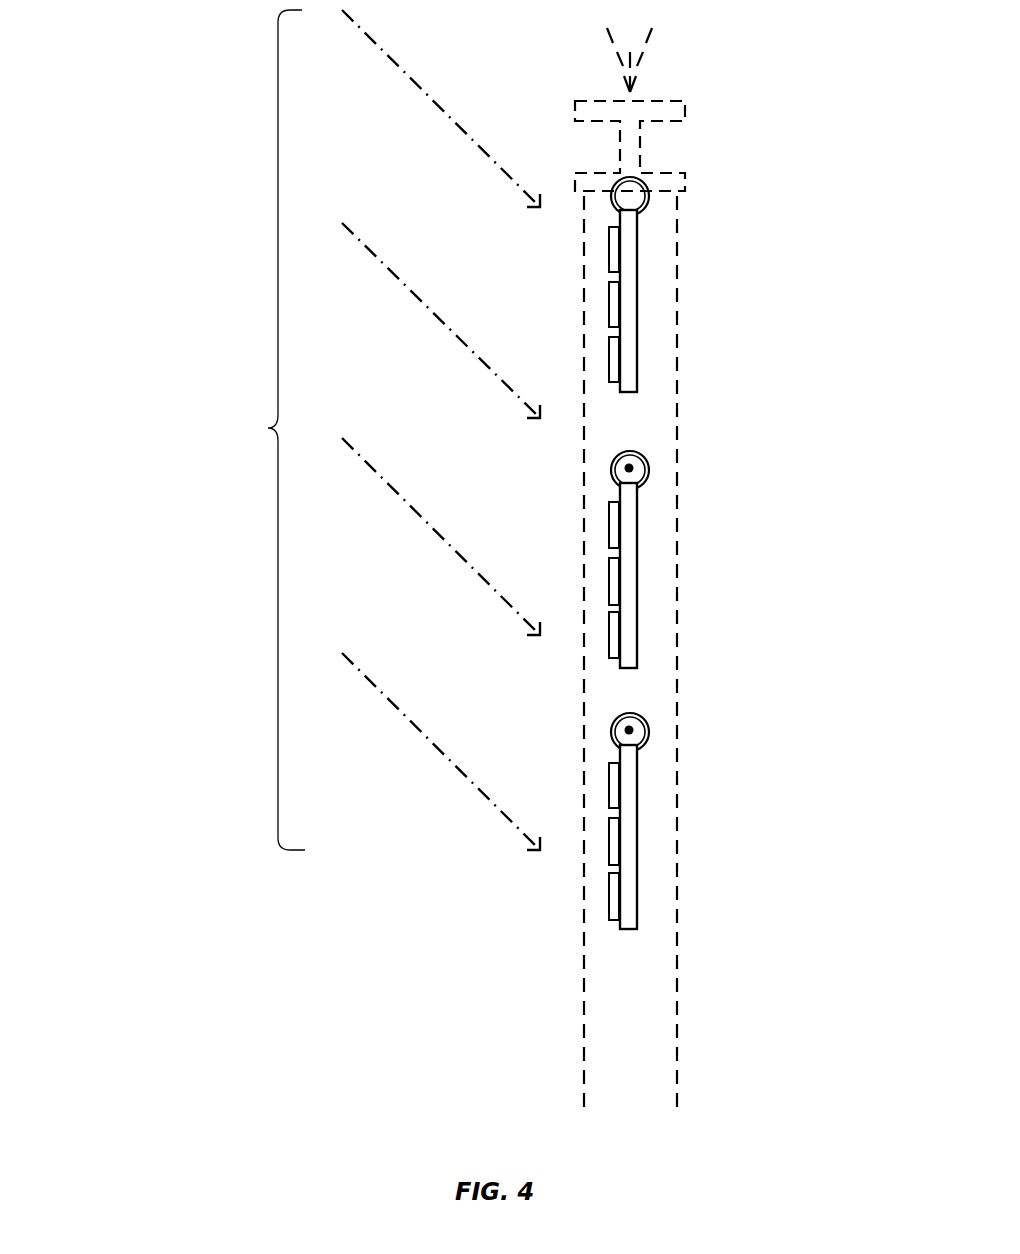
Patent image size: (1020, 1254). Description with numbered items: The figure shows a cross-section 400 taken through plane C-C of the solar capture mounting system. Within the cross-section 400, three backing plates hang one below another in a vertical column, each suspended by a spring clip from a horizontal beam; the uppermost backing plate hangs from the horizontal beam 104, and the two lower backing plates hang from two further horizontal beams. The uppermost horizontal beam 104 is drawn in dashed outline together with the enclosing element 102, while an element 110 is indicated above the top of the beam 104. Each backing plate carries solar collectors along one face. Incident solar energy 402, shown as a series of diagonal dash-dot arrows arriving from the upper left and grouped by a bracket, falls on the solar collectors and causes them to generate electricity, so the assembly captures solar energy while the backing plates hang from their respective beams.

The cross-section 400 is at (119, 22).
The incident solar energy 402 is at (384, 430).
The light beam 110 is at (648, 42).
The horizontal beam 104 is at (685, 176).
The housing 102 is at (677, 341).